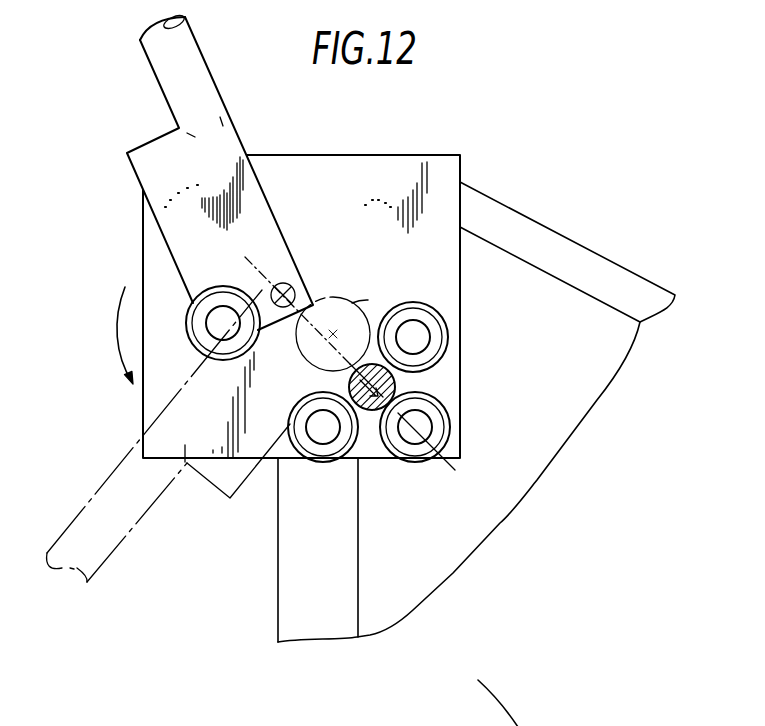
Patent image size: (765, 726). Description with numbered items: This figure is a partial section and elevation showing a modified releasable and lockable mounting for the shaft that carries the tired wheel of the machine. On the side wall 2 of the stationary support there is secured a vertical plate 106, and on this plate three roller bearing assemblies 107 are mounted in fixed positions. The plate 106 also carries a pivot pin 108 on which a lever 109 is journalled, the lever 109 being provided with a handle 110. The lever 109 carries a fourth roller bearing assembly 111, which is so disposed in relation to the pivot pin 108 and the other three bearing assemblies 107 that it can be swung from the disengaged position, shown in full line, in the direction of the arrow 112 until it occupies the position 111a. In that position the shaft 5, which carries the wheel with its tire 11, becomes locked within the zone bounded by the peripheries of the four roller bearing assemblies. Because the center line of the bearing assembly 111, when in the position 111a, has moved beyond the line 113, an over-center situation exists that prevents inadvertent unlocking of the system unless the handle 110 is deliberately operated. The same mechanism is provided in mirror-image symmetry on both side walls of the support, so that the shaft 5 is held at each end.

The side wall 2 is at (598, 380).
The transverse shaft 5 is at (393, 382).
The tire 11 is at (527, 725).
The vertical plate 106 is at (365, 163).
The roller bearing assemblies 107 is at (433, 325).
The pivot pin 108 is at (300, 290).
The lever 109 is at (277, 252).
The handle 110 is at (187, 68).
The fourth roller bearing assembly 111 is at (205, 337).
The locking position of the fourth bearing assembly 111a is at (362, 302).
The arrow 112 is at (120, 352).
The line 113 is at (241, 257).